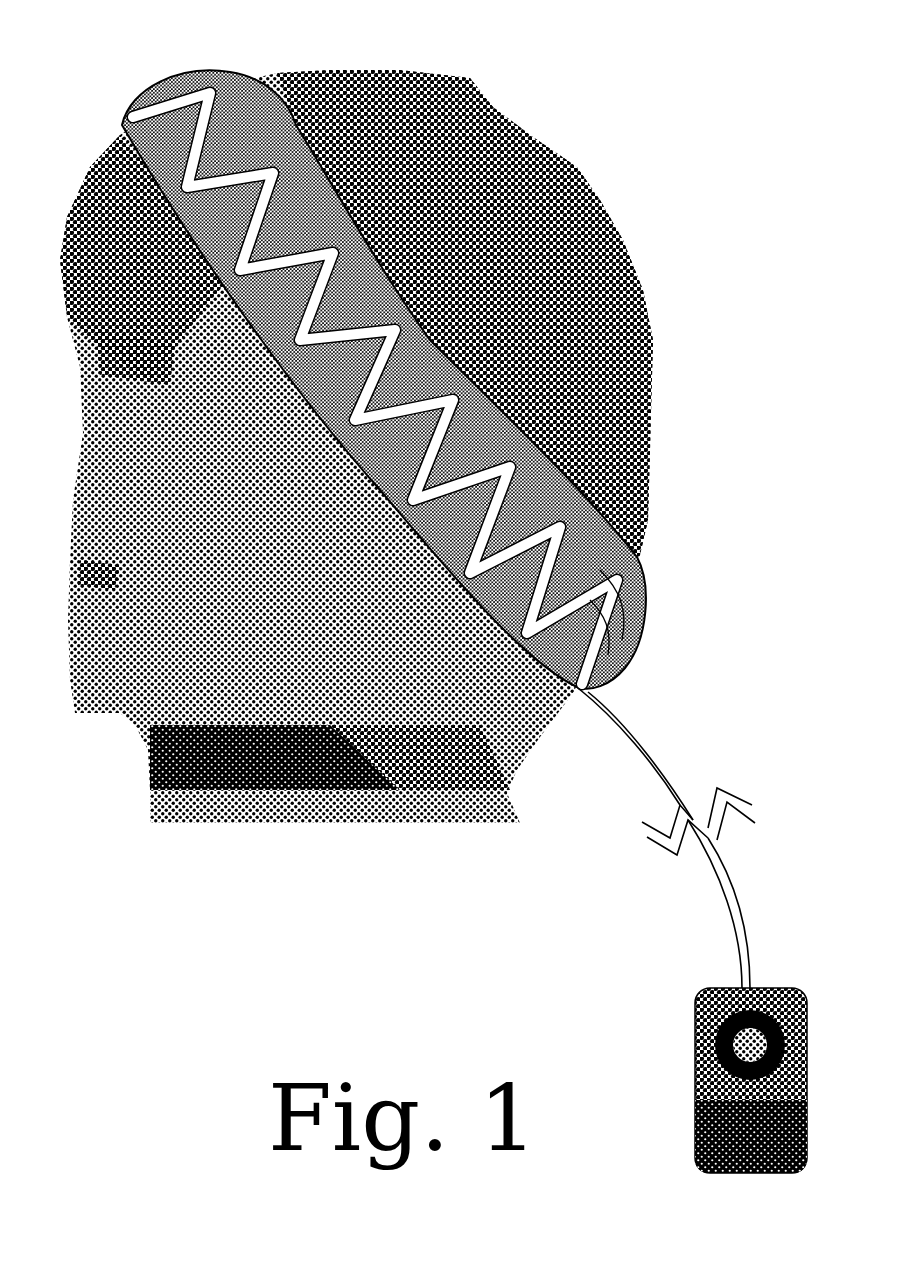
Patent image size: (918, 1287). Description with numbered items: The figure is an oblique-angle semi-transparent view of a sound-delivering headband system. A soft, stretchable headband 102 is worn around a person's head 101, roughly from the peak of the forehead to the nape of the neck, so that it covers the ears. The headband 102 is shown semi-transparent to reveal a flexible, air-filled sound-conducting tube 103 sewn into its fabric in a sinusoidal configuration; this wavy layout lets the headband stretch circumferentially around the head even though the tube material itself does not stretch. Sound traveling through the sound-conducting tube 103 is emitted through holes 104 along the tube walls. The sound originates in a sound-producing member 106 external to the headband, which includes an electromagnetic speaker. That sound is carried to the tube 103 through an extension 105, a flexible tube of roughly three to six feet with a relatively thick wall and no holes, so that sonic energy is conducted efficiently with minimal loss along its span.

The person's head 101 is at (563, 140).
The headband 102 is at (173, 92).
The sound-conducting tube 103 is at (567, 557).
The holes 104 is at (637, 627).
The extension 105 is at (713, 877).
The sound-producing member 106 is at (695, 1032).